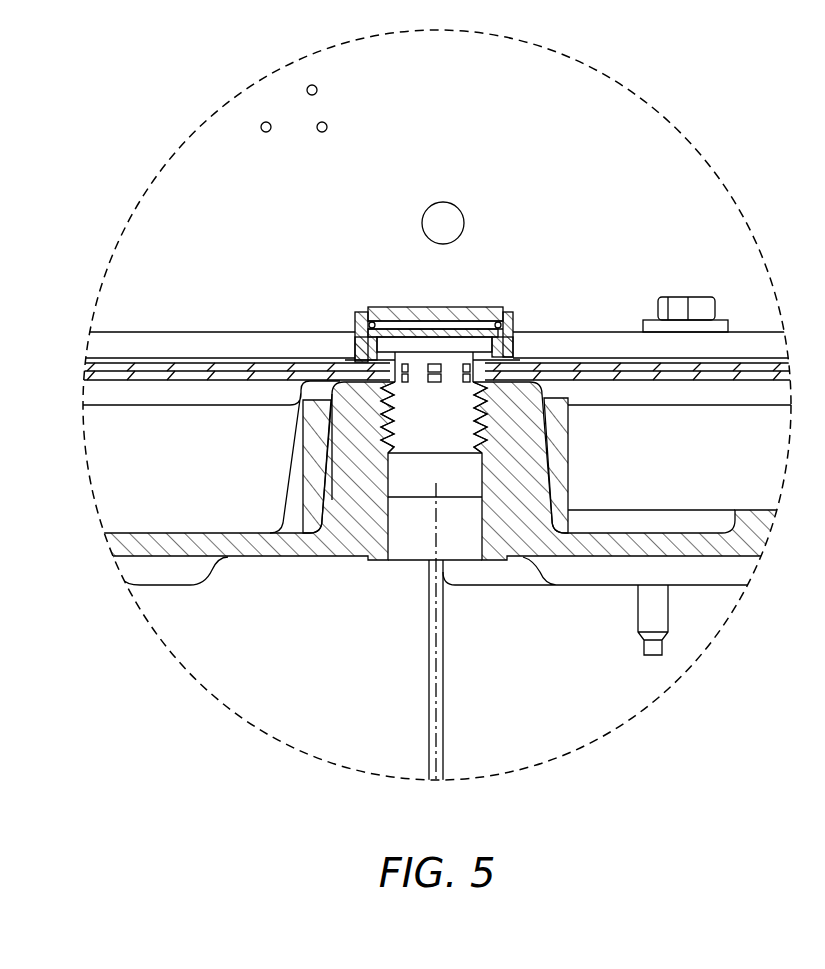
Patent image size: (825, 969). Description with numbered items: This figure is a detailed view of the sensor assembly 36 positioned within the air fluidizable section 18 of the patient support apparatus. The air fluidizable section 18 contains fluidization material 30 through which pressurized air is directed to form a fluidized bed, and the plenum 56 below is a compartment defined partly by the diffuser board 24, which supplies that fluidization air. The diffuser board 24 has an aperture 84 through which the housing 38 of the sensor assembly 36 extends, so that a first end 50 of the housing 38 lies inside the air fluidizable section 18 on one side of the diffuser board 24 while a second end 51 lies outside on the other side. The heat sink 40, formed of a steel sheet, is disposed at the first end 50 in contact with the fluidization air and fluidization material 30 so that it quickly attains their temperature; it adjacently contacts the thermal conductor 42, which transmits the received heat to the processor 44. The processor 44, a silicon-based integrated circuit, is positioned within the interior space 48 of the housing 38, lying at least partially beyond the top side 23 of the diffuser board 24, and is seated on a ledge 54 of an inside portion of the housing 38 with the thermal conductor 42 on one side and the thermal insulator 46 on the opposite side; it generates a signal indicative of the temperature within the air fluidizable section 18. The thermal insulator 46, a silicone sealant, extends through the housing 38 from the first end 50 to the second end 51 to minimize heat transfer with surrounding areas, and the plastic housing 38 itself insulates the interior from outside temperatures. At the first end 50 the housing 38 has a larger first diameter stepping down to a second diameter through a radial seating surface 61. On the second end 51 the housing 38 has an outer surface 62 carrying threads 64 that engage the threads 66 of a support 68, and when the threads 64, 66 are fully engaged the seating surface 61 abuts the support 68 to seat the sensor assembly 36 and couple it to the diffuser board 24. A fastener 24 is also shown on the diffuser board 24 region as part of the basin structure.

The air fluidizable section 18 is at (505, 102).
The top side 23 is at (170, 332).
The diffuser board 24 is at (743, 343).
The fluidization material 30 is at (318, 83).
The sensor assembly 36 is at (492, 254).
The housing 38 is at (350, 320).
The heat sink 40 is at (380, 304).
The thermal conductor 42 is at (517, 323).
The processor 44 is at (498, 335).
The thermal insulator 46 is at (422, 418).
The interior space 48 is at (468, 458).
The first end 50 is at (252, 270).
The second end 51 is at (367, 598).
The ledge 54 is at (433, 317).
The plenum 56 is at (146, 474).
The radial seating surface 61 is at (516, 354).
The outer surface 62 is at (393, 451).
The threads 64 is at (393, 437).
The threads 66 is at (376, 429).
The support 68 is at (288, 551).
The aperture 84 is at (350, 347).